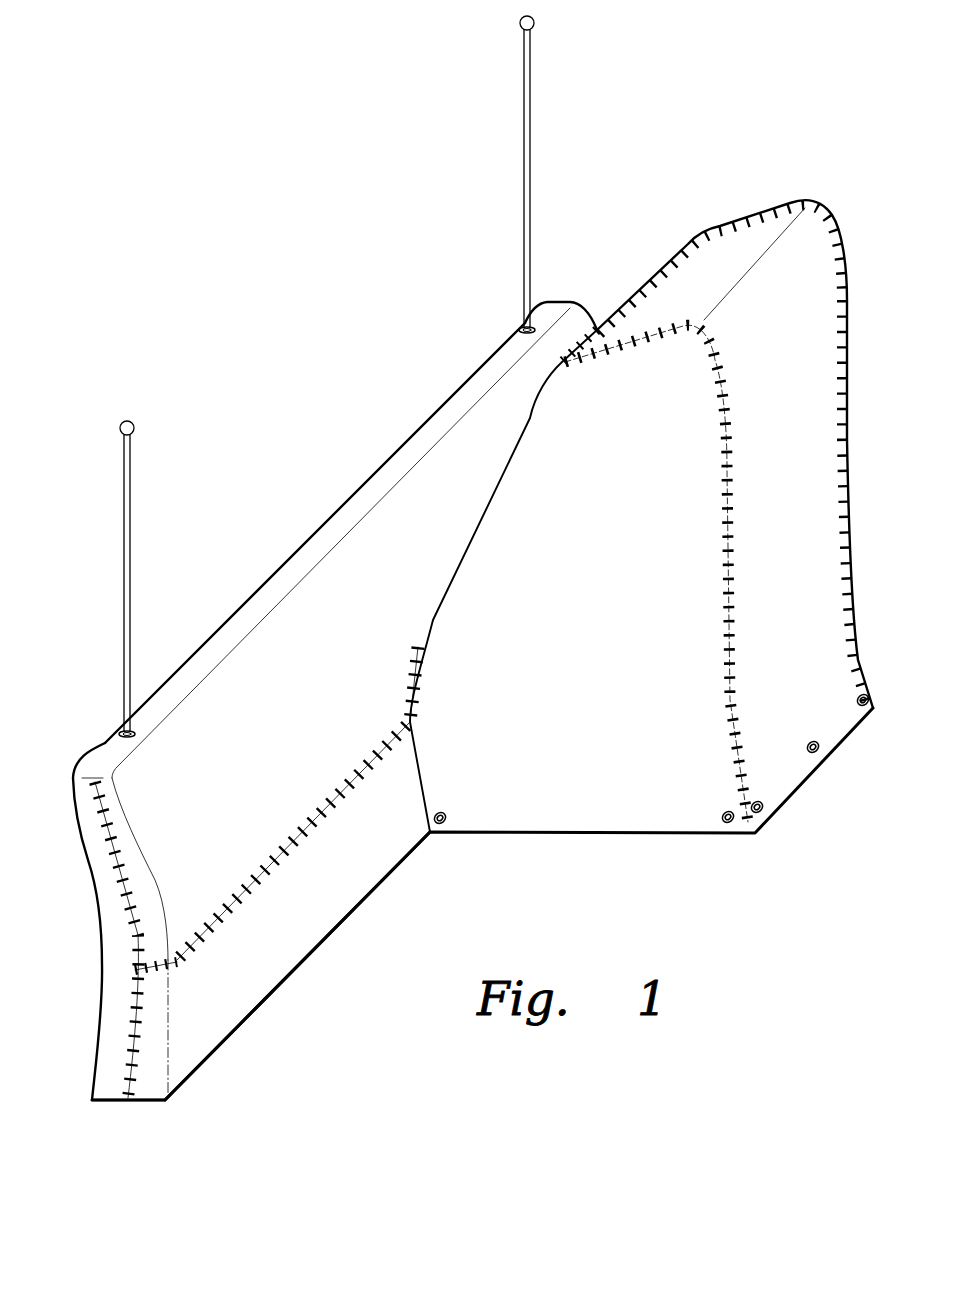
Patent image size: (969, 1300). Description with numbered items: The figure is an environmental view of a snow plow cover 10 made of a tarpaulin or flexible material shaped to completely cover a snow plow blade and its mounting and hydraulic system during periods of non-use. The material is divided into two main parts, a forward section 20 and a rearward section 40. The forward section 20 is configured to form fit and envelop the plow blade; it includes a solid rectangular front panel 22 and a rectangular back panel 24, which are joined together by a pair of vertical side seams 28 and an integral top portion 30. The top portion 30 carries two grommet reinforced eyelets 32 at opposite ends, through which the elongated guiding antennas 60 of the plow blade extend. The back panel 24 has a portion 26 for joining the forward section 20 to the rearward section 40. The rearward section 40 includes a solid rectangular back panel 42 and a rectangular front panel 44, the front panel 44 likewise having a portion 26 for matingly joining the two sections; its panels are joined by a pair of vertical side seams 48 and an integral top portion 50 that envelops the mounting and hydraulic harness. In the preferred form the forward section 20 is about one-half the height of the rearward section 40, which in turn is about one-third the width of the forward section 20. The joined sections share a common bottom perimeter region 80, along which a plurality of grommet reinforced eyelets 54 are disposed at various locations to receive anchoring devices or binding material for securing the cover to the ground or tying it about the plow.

The snow plow cover 10 is at (286, 302).
The forward section 20 is at (228, 766).
The front panel 22 is at (92, 935).
The back panel 24 is at (350, 893).
The joining portion 26 is at (396, 707).
The vertical side seams 28 is at (137, 998).
The top portion 30 is at (318, 525).
The grommet reinforced eyelets 32 is at (560, 290).
The rearward section 40 is at (683, 541).
The back panel 42 is at (810, 462).
The front panel 44 is at (527, 468).
The vertical side seams 48 is at (610, 420).
The top portion 50 is at (720, 267).
The grommet reinforced eyelets 54 is at (446, 822).
The guiding antennas 60 is at (531, 185).
The bottom perimeter region 80 is at (270, 997).